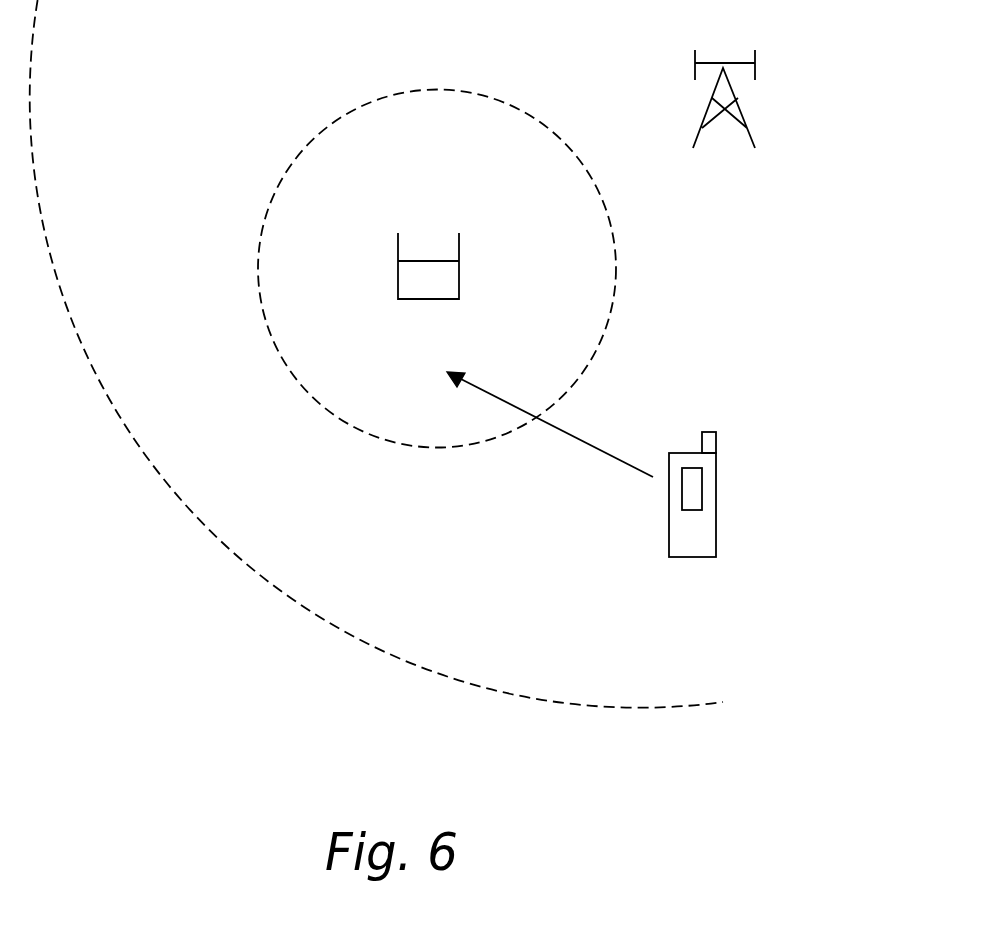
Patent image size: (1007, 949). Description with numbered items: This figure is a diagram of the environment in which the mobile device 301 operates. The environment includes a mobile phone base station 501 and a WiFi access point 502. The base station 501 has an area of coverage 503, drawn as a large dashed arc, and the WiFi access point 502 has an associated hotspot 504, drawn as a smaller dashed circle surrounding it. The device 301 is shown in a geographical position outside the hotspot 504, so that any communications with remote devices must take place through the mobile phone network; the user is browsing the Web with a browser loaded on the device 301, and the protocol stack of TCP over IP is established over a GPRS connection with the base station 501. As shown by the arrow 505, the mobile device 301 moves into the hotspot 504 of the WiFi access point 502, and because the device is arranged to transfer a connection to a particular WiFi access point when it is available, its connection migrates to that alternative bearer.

The mobile device 301 is at (668, 528).
The mobile phone base station 501 is at (742, 112).
The WiFi access point 502 is at (459, 275).
The area of coverage 503 is at (278, 587).
The hotspot 504 is at (317, 135).
The arrow 505 is at (550, 429).